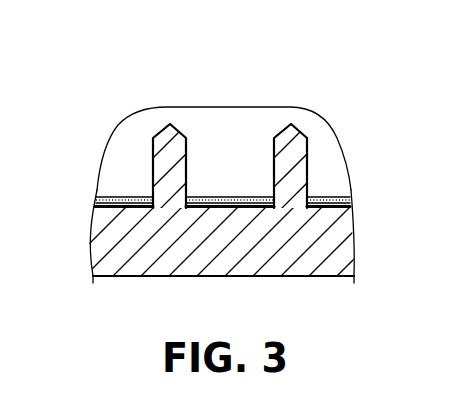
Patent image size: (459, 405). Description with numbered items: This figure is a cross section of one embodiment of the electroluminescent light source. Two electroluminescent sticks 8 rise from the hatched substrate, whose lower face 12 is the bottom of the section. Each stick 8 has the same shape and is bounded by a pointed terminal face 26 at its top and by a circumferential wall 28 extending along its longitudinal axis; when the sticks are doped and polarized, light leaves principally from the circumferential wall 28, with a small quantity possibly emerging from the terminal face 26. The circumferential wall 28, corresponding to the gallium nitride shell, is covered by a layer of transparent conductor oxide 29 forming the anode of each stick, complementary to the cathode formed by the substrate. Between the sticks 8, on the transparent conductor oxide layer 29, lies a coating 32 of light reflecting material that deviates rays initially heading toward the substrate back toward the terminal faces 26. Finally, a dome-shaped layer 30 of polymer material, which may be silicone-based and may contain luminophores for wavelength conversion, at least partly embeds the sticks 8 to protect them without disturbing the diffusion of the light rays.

The electroluminescent stick 8 is at (154, 161).
The lower face 12 is at (323, 278).
The terminal face 26 is at (298, 128).
The circumferential wall 28 is at (303, 152).
The layer of transparent conductor oxide 29 is at (133, 206).
The layer of polymer material 30 is at (215, 128).
The coating of light reflecting material 32 is at (330, 196).